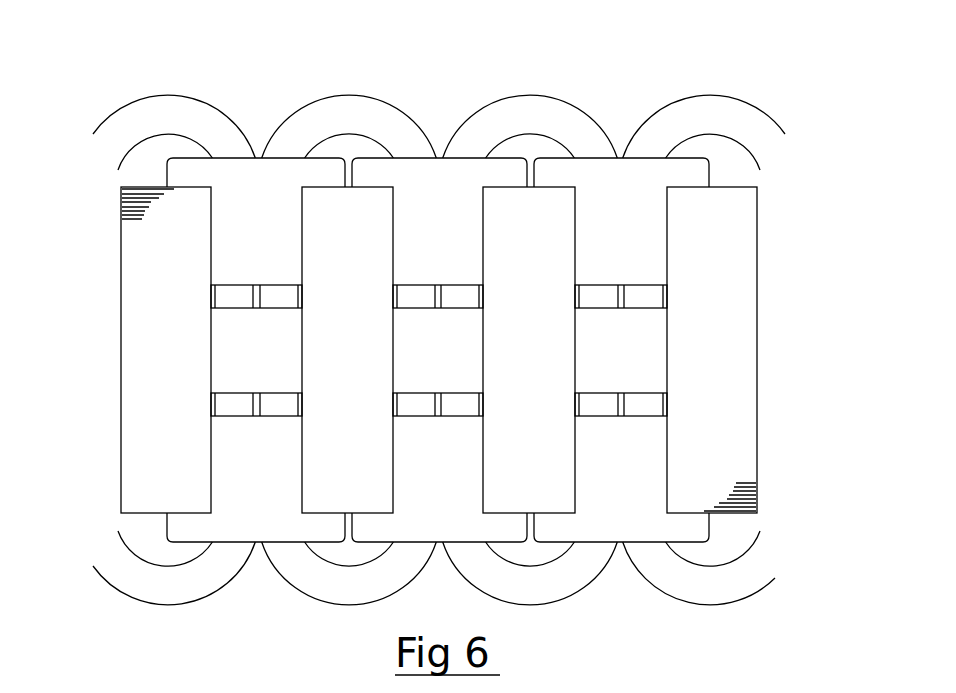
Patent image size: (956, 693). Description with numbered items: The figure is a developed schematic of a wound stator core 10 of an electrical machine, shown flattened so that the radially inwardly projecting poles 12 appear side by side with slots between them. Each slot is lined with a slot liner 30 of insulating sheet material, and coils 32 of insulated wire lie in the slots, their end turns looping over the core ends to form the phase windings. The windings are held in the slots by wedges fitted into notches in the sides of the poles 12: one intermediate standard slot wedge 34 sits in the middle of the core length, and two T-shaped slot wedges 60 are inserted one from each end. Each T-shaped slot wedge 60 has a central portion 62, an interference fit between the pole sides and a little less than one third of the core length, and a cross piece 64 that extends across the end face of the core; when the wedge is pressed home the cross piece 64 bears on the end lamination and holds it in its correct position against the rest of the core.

The stator core 10 is at (479, 318).
The pole 12 is at (717, 262).
The slot liner 30 is at (648, 408).
The coil 32 is at (528, 120).
The slot wedge 34 is at (423, 352).
The T-shaped slot wedge 60 is at (422, 252).
The central portion 62 is at (448, 250).
The cross piece 64 is at (377, 175).